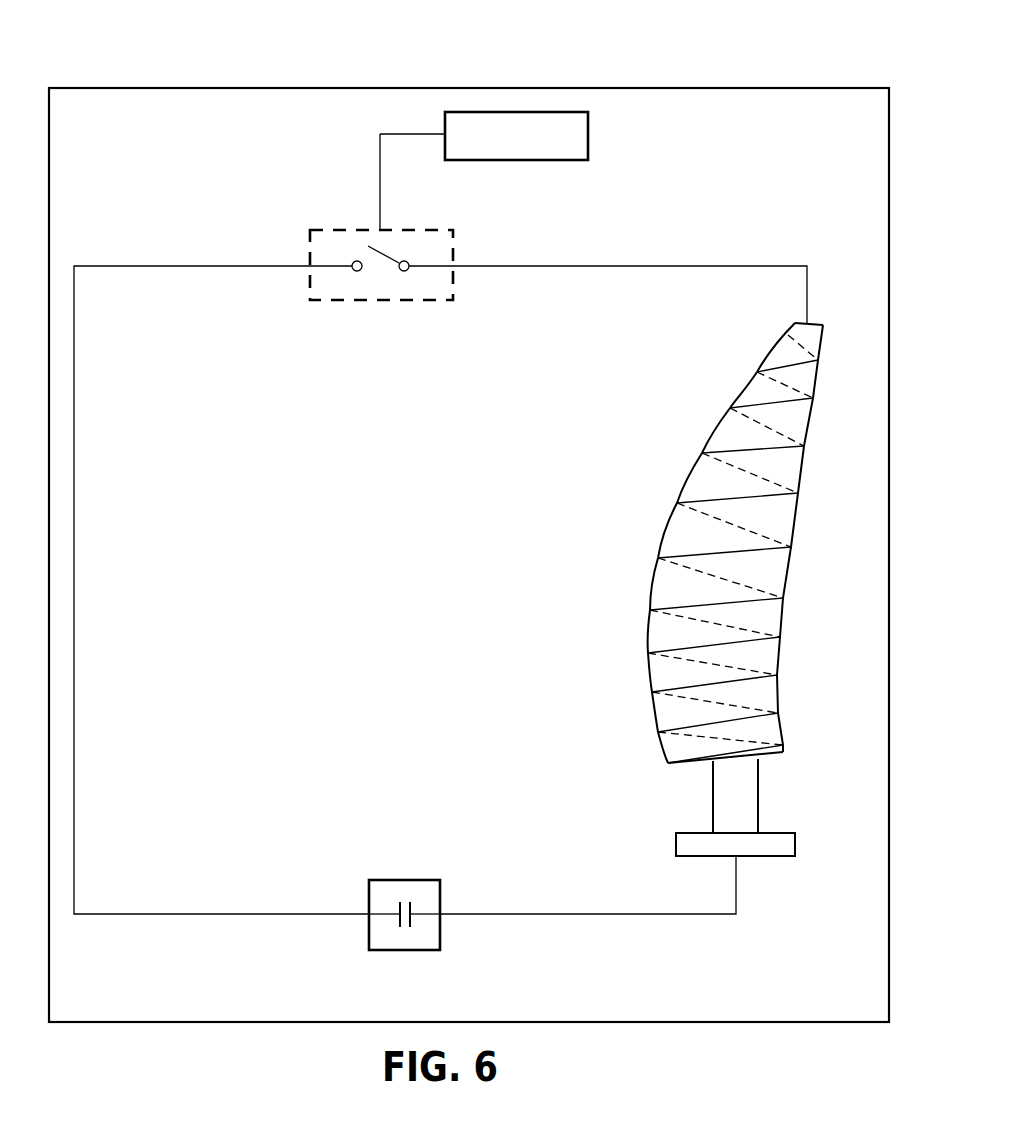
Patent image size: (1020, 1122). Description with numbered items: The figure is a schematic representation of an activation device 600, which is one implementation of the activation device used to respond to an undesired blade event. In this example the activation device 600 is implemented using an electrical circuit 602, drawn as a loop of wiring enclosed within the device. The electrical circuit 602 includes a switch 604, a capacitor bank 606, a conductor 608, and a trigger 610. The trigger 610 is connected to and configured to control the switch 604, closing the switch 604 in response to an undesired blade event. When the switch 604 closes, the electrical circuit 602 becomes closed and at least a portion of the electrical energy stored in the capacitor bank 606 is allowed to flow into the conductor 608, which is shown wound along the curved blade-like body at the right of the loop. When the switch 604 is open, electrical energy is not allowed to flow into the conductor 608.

The activation device 600 is at (355, 84).
The electrical circuit 602 is at (676, 220).
The switch 604 is at (345, 230).
The capacitor bank 606 is at (403, 950).
The conductor 608 is at (670, 523).
The trigger 610 is at (517, 160).